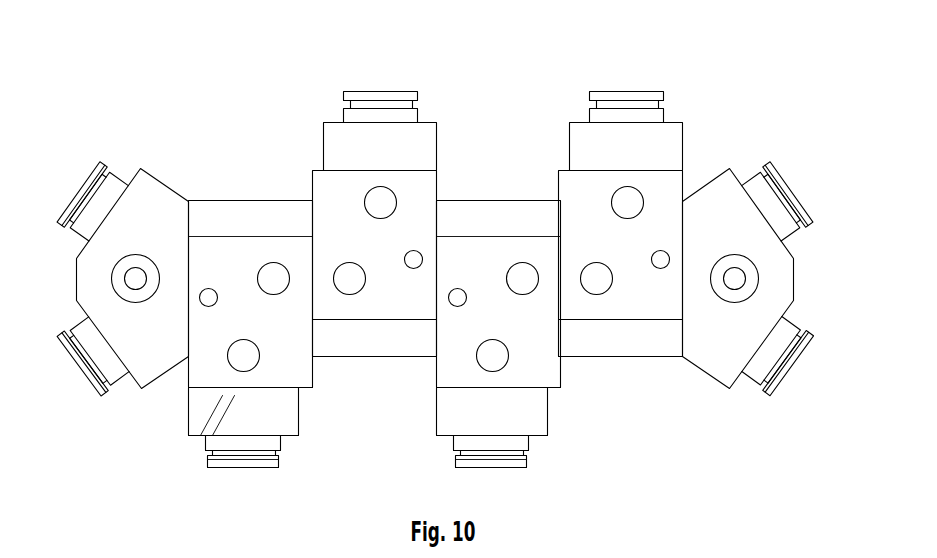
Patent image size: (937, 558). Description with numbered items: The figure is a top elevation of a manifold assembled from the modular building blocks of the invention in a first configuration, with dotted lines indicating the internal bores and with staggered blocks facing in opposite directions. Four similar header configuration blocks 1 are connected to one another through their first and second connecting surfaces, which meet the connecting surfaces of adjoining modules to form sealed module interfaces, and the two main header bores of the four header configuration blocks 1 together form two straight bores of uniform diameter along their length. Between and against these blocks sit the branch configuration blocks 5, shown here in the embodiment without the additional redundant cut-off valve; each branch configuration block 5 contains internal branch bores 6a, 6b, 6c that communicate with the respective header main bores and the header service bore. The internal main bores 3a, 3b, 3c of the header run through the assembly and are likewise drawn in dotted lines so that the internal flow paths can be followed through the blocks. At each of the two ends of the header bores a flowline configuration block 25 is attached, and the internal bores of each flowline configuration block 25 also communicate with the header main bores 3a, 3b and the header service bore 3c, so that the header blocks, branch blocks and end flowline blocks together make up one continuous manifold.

The header configuration block 1 is at (578, 198).
The header main bore 3a is at (633, 308).
The header main bore 3b is at (232, 229).
The header service bore 3c is at (485, 280).
The branch configuration block 5 is at (337, 137).
The internal branch bore 6a is at (244, 418).
The internal branch bore 6b is at (272, 365).
The internal branch bore 6c is at (212, 405).
The flowline configuration block 25 is at (725, 182).